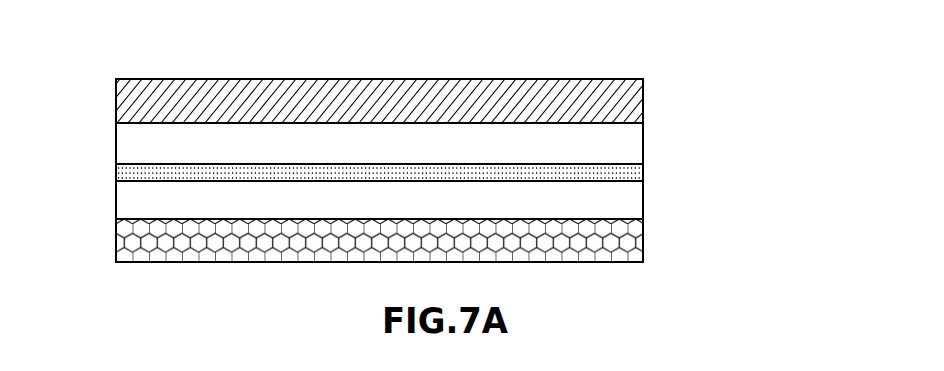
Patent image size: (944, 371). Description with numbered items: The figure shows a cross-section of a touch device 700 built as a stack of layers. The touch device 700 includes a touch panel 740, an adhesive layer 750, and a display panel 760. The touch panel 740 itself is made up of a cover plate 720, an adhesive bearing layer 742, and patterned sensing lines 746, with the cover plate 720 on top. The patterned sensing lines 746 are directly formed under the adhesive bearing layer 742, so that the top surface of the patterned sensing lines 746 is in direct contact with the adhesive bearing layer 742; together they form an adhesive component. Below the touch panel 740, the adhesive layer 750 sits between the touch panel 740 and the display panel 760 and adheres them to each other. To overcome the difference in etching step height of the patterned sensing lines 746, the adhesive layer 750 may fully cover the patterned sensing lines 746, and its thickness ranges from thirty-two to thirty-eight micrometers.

The touch device 700 is at (92, 38).
The cover plate 720 is at (643, 96).
The touch panel 740 is at (778, 82).
The adhesive bearing layer 742 is at (627, 142).
The patterned sensing lines 746 is at (627, 175).
The adhesive layer 750 is at (627, 205).
The display panel 760 is at (627, 247).